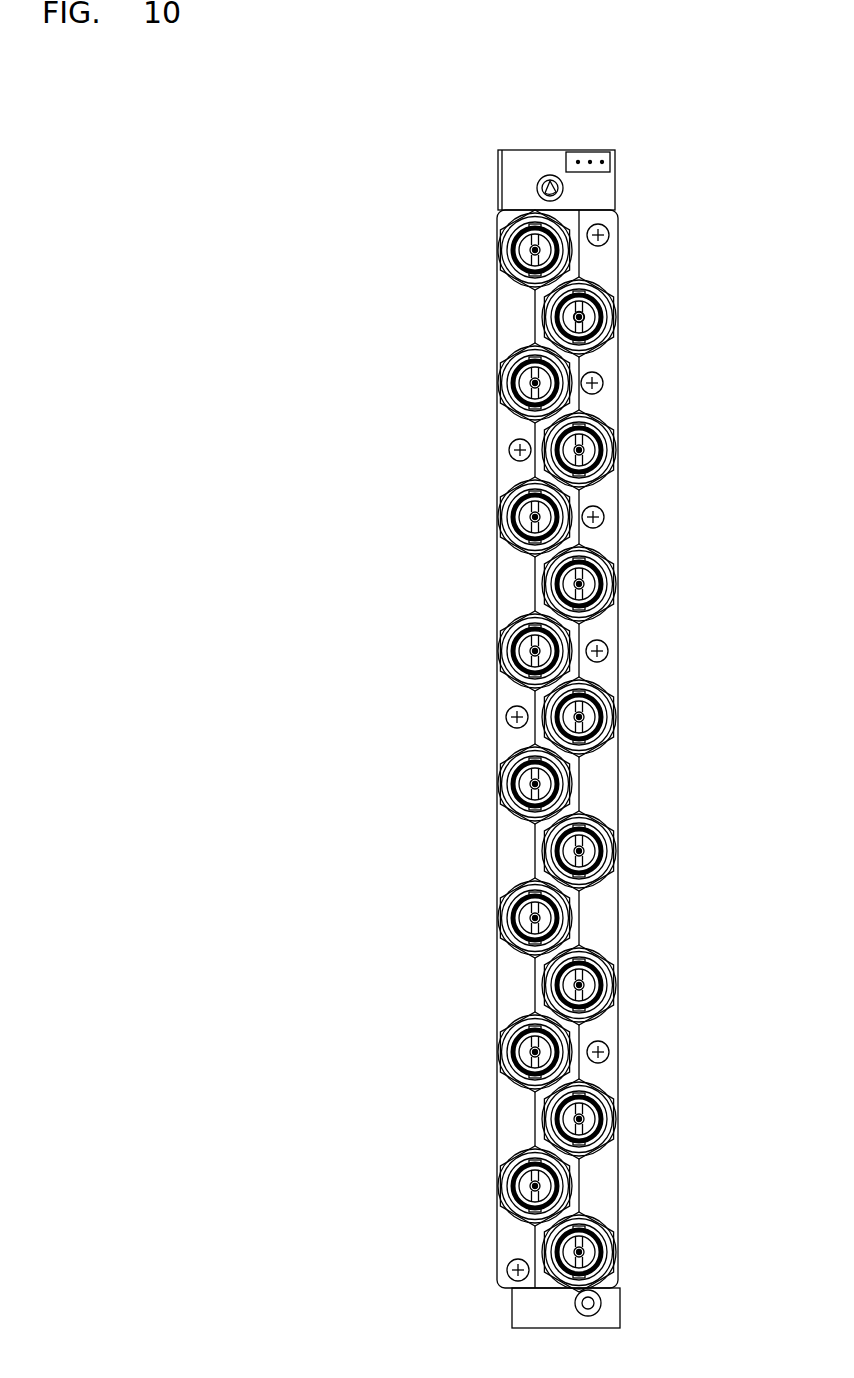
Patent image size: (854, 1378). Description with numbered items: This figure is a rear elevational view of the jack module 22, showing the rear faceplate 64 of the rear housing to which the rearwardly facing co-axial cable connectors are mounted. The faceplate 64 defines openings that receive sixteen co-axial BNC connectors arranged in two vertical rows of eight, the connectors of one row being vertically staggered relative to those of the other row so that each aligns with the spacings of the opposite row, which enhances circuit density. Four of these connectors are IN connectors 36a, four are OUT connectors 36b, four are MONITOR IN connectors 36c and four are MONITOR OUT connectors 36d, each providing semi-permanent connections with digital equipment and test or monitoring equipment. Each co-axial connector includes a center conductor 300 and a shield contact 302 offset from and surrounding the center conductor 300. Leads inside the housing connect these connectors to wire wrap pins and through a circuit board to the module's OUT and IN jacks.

The jack module 22 is at (340, 143).
The rear faceplate 64 is at (607, 213).
The IN connectors 36a is at (507, 385).
The OUT connectors 36b is at (520, 250).
The MONITOR IN connectors 36c is at (507, 920).
The MONITOR OUT connectors 36d is at (510, 785).
The center conductor 300 is at (625, 309).
The shield contact 302 is at (600, 318).